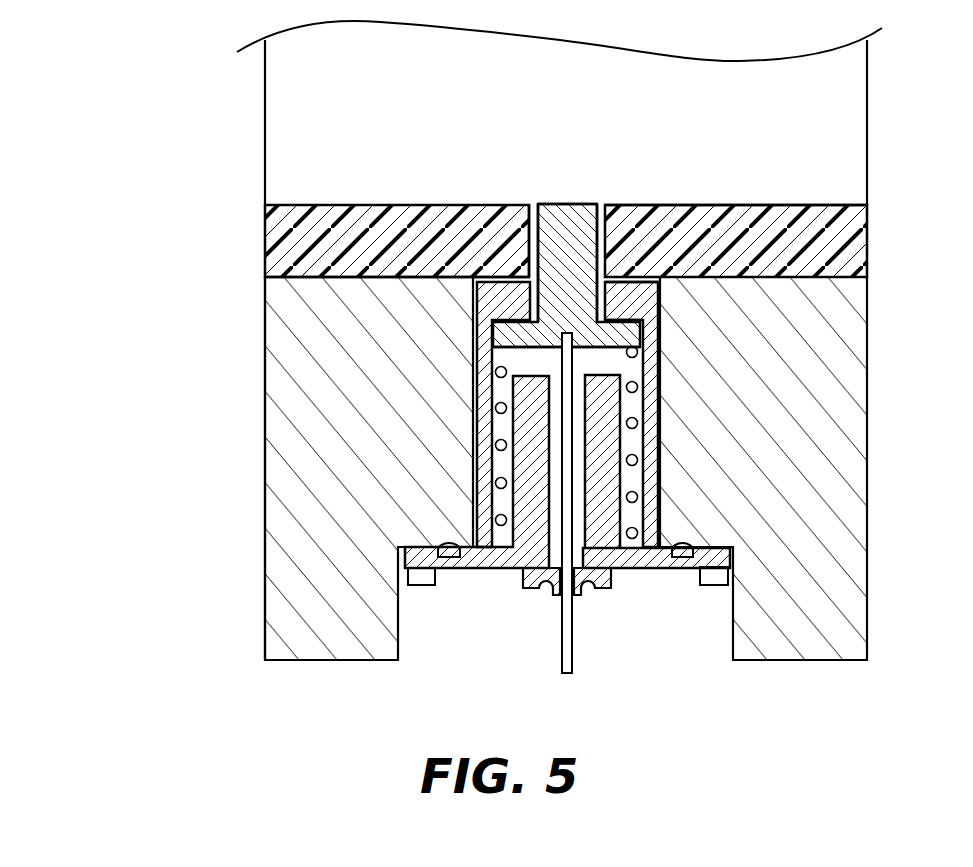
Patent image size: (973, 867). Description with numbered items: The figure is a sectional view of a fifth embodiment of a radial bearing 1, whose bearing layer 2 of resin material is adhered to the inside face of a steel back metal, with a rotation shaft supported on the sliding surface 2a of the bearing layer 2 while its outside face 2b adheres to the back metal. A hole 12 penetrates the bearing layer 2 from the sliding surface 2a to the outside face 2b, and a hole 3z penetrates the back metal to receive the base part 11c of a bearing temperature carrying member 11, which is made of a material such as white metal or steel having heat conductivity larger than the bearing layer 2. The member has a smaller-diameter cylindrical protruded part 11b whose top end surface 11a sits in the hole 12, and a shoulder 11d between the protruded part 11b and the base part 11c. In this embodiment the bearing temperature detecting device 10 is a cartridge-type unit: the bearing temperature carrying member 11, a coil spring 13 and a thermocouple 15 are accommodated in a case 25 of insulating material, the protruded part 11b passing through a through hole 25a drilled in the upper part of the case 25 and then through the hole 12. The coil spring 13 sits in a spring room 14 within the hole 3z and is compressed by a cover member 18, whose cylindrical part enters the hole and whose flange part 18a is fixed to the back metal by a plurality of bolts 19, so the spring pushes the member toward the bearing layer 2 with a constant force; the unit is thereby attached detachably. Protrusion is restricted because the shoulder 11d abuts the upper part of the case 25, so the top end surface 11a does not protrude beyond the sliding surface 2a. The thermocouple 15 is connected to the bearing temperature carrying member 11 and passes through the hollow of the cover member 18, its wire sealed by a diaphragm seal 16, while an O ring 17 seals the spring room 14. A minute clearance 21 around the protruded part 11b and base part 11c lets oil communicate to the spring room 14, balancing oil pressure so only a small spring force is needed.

The radial bearing 1 is at (228, 290).
The bearing layer 2 is at (840, 214).
The sliding surface 2a is at (788, 205).
The outside face 2b is at (400, 278).
The hole 3z is at (663, 520).
The bearing temperature detecting device 10 is at (432, 506).
The bearing temperature carrying member 11 is at (584, 198).
The top end surface 11a is at (541, 233).
The protruded part 11b is at (532, 200).
The base part 11c is at (640, 348).
The shoulder 11d is at (650, 293).
The hole 12 is at (608, 298).
The coil spring 13 is at (640, 498).
The spring room 14 is at (632, 440).
The thermocouple 15 is at (570, 650).
The diaphragm seal 16 is at (536, 597).
The O ring 17 is at (444, 556).
The cover member 18 is at (520, 455).
The flange part 18a is at (633, 558).
The bolts 19 is at (715, 577).
The minute clearance 21 is at (520, 265).
The case 25 is at (480, 390).
The through hole 25a is at (627, 320).